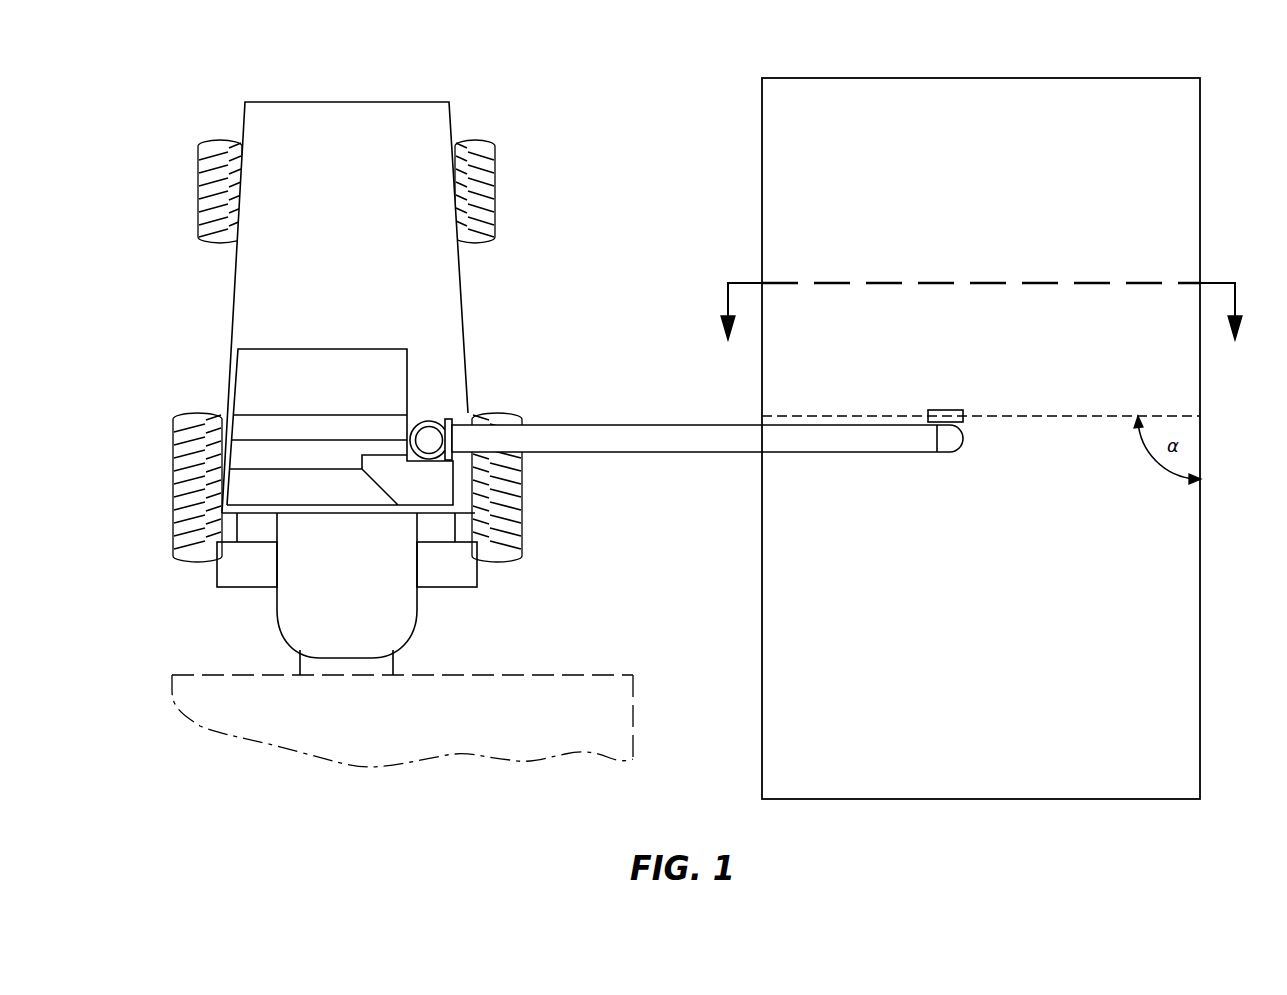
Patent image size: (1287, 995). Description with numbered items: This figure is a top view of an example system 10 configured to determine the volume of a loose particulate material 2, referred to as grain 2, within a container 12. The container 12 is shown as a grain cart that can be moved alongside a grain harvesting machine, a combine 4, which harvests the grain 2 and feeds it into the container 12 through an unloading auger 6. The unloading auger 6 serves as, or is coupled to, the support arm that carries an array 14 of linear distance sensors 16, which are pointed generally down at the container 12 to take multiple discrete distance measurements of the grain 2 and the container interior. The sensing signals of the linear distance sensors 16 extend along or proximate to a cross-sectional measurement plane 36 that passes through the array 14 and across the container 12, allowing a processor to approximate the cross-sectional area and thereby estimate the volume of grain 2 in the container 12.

The combine 4 is at (215, 98).
The unloading auger 6 is at (648, 424).
The system 10 is at (1169, 56).
The container 12 is at (1201, 185).
The array 14 is at (920, 399).
The linear distance sensor 16 is at (946, 410).
The cross-sectional measurement plane 36 is at (1045, 415).
The loose particulate material 2 is at (982, 327).